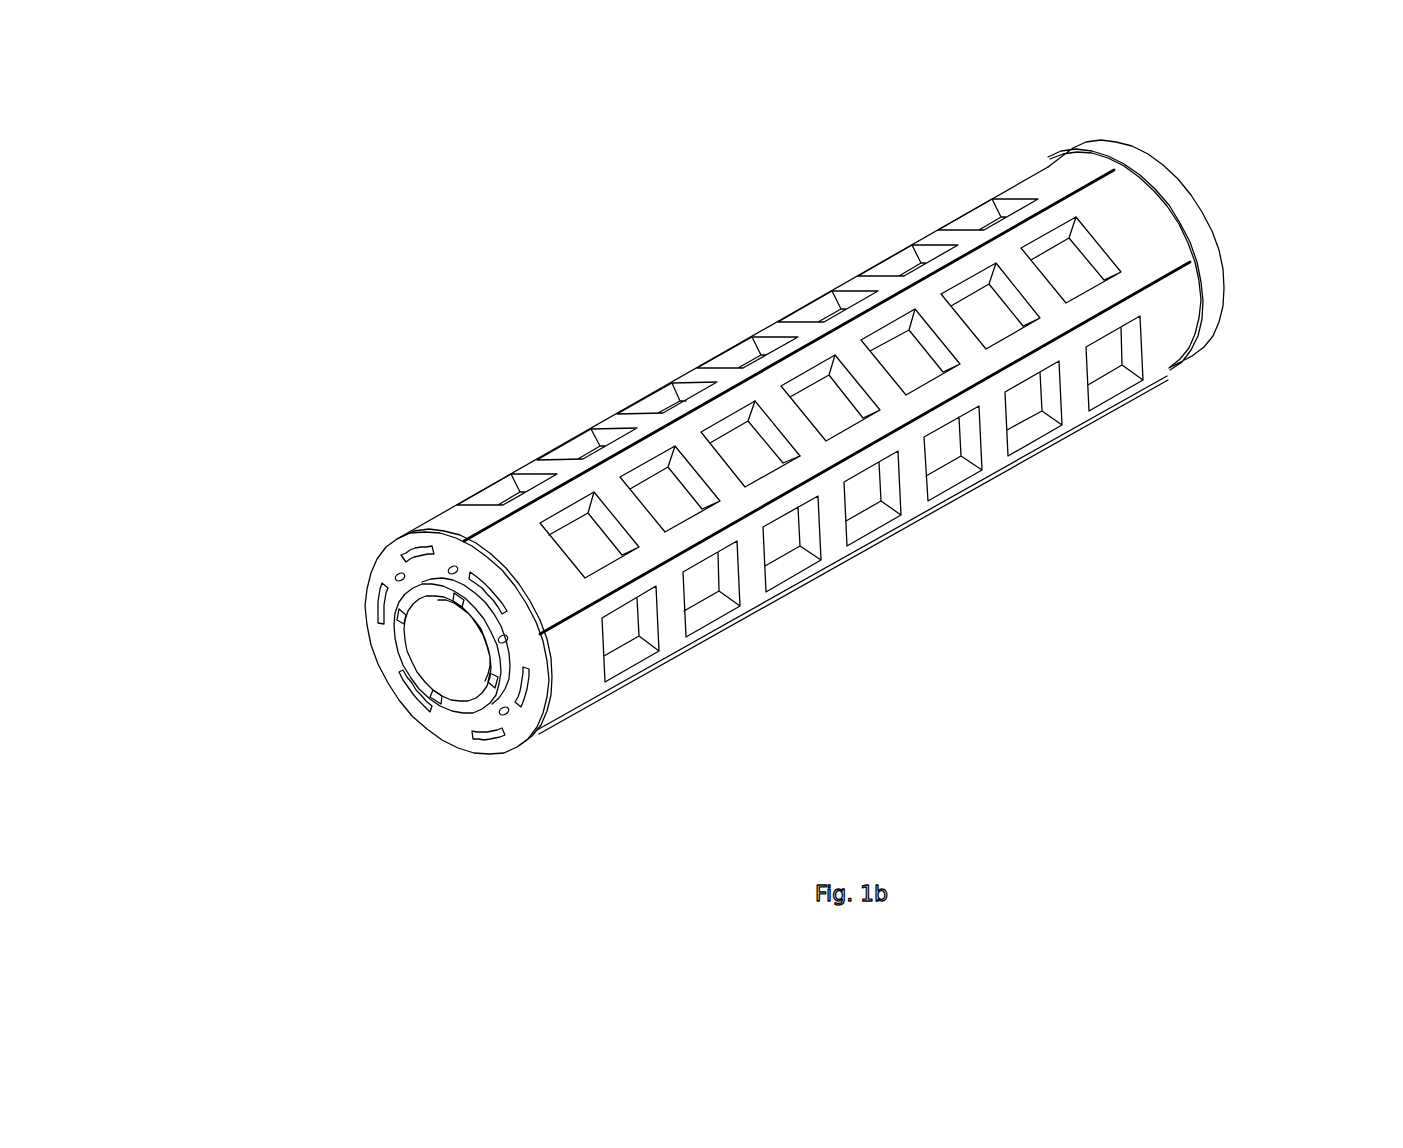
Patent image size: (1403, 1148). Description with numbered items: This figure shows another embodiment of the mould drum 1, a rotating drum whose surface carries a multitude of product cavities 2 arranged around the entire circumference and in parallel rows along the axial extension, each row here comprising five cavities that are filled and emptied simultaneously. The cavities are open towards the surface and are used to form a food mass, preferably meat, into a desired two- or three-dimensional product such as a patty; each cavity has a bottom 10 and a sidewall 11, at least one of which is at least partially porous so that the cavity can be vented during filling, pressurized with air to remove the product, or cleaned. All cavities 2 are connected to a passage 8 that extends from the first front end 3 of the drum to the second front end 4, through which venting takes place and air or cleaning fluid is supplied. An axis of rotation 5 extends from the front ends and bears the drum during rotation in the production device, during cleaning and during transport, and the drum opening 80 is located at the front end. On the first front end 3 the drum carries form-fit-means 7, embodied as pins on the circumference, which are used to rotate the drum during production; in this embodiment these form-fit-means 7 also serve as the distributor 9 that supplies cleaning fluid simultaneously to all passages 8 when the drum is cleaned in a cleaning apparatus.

The mould drum 1 is at (784, 469).
The product cavities 2 is at (682, 412).
The first front end 3 is at (363, 665).
The second front end 4 is at (1158, 186).
The axis of rotation 5 is at (333, 673).
The drum opening 80 is at (447, 660).
The form-fit-means 7 is at (343, 645).
The distributor 9 is at (398, 627).
The passage 8 is at (396, 576).
The bottom 10 is at (737, 445).
The sidewall 11 is at (772, 432).